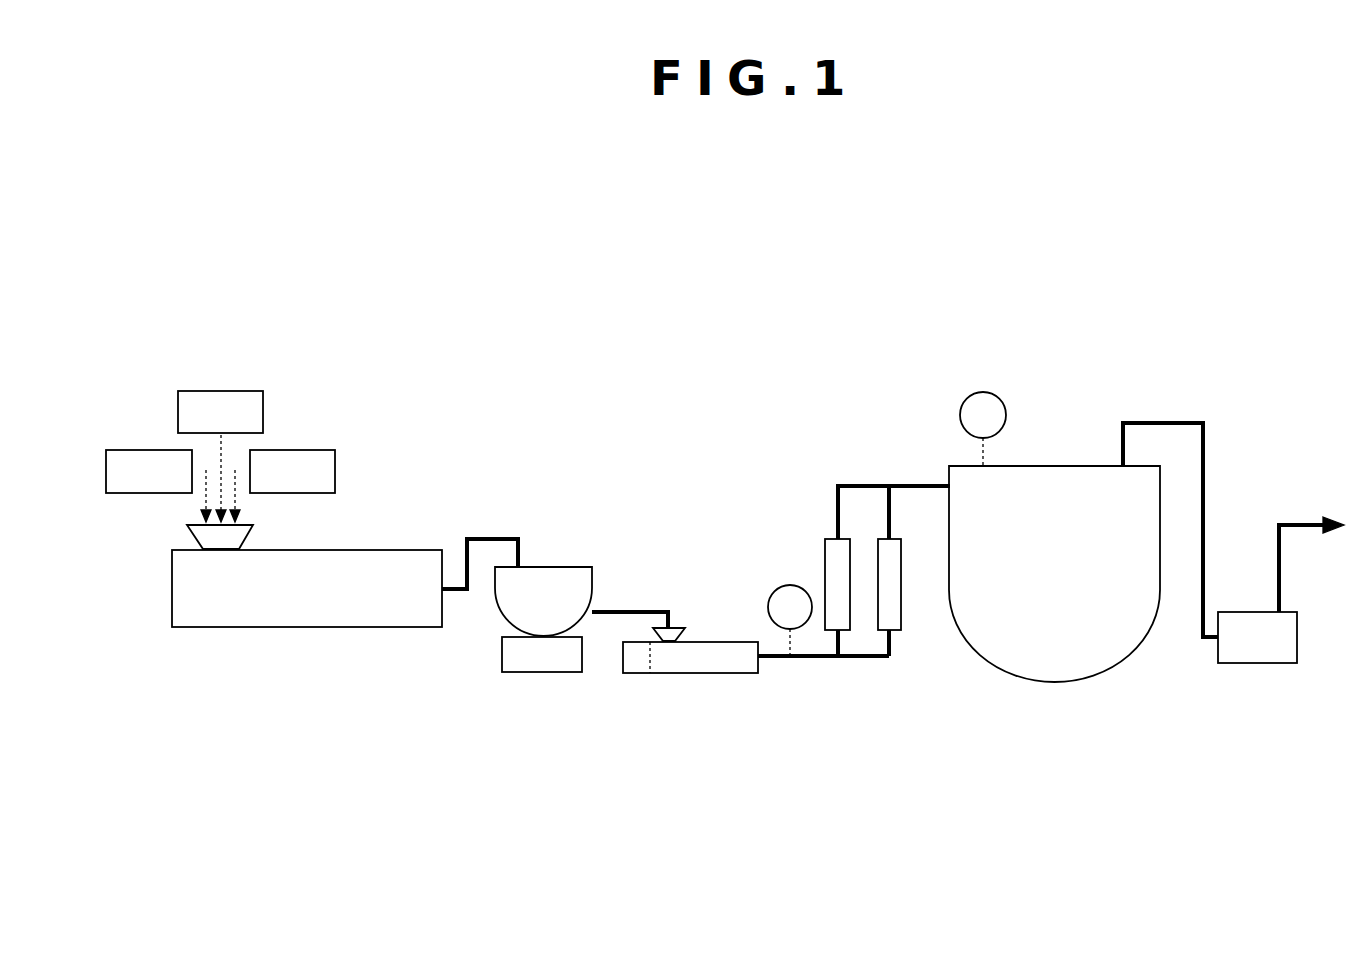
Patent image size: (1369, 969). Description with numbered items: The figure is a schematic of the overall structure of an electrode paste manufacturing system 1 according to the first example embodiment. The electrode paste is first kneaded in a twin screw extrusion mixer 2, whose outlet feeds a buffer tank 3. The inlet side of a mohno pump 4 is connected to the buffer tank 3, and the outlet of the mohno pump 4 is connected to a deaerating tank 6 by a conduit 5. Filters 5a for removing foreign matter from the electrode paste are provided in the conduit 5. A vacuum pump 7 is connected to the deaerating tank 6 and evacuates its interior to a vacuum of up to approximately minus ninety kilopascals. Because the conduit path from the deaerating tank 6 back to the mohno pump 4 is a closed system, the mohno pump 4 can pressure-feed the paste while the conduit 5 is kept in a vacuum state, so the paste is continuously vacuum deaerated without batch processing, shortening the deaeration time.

The electrode paste manufacturing system 1 is at (1052, 290).
The twin screw extrusion mixer 2 is at (323, 657).
The buffer tank 3 is at (542, 695).
The mohno pump 4 is at (688, 695).
The conduit 5 is at (860, 683).
The filters 5a is at (822, 563).
The deaerating tank 6 is at (1052, 698).
The vacuum pump 7 is at (1255, 698).